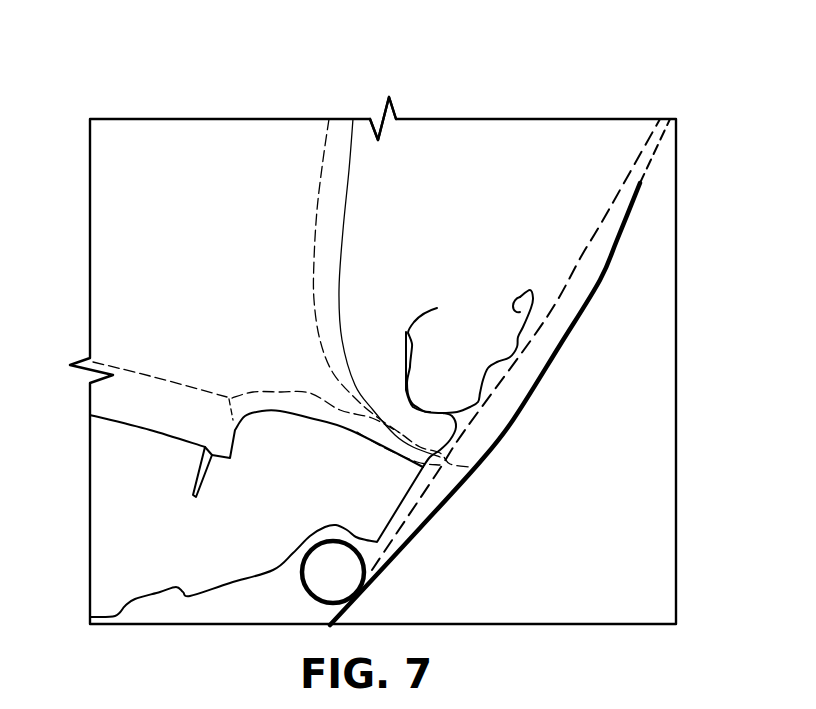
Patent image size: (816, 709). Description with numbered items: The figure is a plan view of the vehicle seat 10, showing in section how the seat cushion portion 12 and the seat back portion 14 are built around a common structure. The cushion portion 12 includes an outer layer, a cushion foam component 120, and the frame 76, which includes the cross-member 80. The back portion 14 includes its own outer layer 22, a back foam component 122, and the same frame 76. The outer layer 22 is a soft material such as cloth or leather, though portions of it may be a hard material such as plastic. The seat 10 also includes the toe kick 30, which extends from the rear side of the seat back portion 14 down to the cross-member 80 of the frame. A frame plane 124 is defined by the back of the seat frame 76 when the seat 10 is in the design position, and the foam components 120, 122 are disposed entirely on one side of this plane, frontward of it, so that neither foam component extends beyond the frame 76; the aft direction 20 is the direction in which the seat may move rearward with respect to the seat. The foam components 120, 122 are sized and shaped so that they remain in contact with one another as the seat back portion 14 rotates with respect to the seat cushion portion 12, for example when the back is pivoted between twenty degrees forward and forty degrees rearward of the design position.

The vehicle seat 10 is at (666, 73).
The cushion portion 12 is at (126, 569).
The back portion 14 is at (498, 163).
The aft direction 20 is at (127, 368).
The outer layer 22 is at (313, 234).
The toe kick 30 is at (452, 498).
The frame 76 is at (525, 282).
The cross-member 80 is at (307, 592).
The foam component 120 is at (118, 481).
The back foam component 122 is at (326, 388).
The frame plane 124 is at (577, 266).